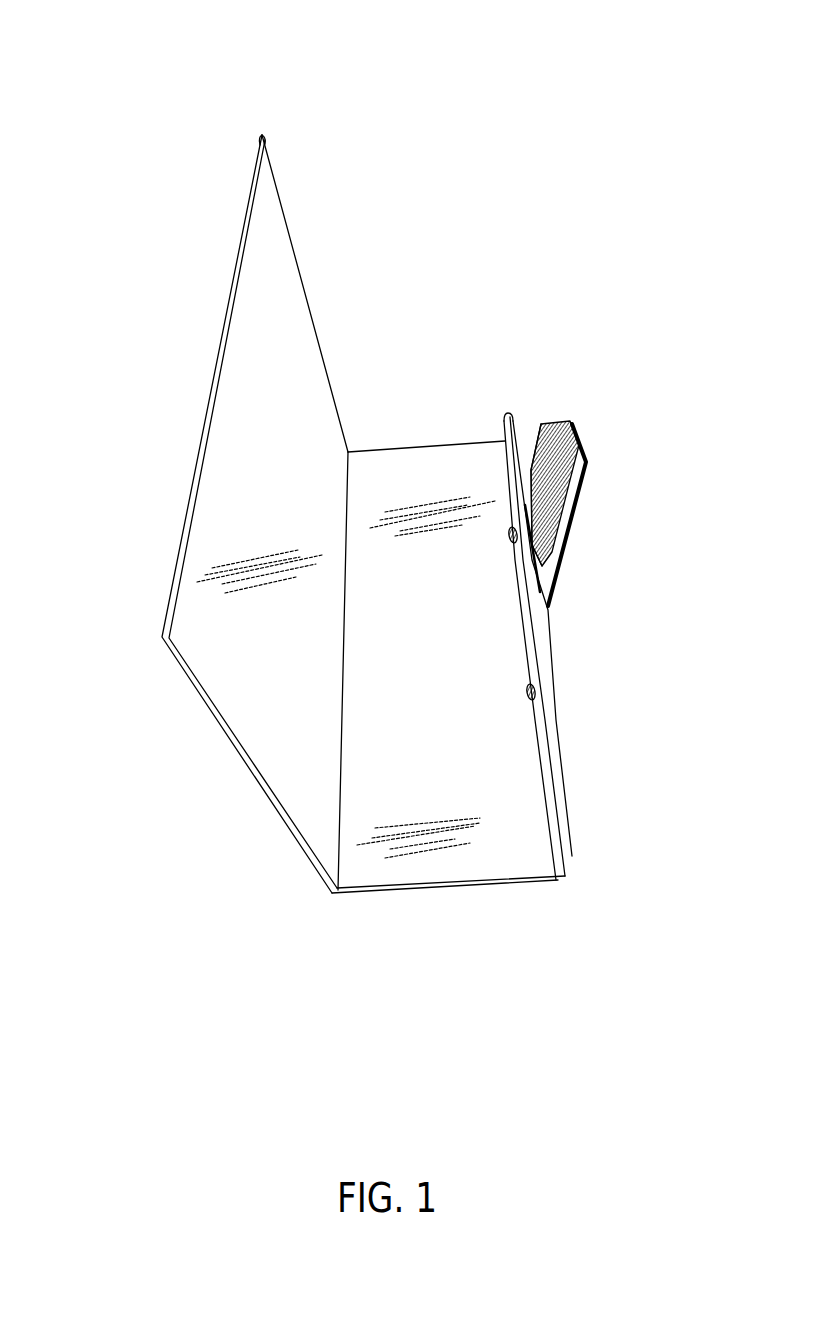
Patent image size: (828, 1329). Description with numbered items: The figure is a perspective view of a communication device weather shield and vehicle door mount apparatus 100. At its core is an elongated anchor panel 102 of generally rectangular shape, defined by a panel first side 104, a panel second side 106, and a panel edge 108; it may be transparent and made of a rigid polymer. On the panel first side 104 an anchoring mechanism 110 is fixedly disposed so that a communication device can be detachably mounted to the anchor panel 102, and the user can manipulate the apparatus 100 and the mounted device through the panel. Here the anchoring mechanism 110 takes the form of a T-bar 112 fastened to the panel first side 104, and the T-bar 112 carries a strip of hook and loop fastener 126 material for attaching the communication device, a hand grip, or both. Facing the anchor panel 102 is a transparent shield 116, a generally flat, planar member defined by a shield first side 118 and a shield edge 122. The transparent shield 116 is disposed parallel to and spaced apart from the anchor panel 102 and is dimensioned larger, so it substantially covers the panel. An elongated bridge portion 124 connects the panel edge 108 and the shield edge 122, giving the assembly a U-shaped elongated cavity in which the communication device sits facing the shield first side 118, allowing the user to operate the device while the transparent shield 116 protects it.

The communication device protective shield apparatus 100 is at (148, 62).
The anchor panel 102 is at (506, 390).
The panel first side 104 is at (514, 440).
The panel second side 106 is at (501, 458).
The panel edge 108 is at (503, 421).
The anchoring mechanism 110 is at (598, 438).
The T-bar 112 is at (547, 650).
The transparent shield 116 is at (185, 351).
The shield first side 118 is at (278, 230).
The shield edge 122 is at (267, 151).
The bridge portion 124 is at (398, 438).
The hook and loop fastener 126 is at (548, 445).